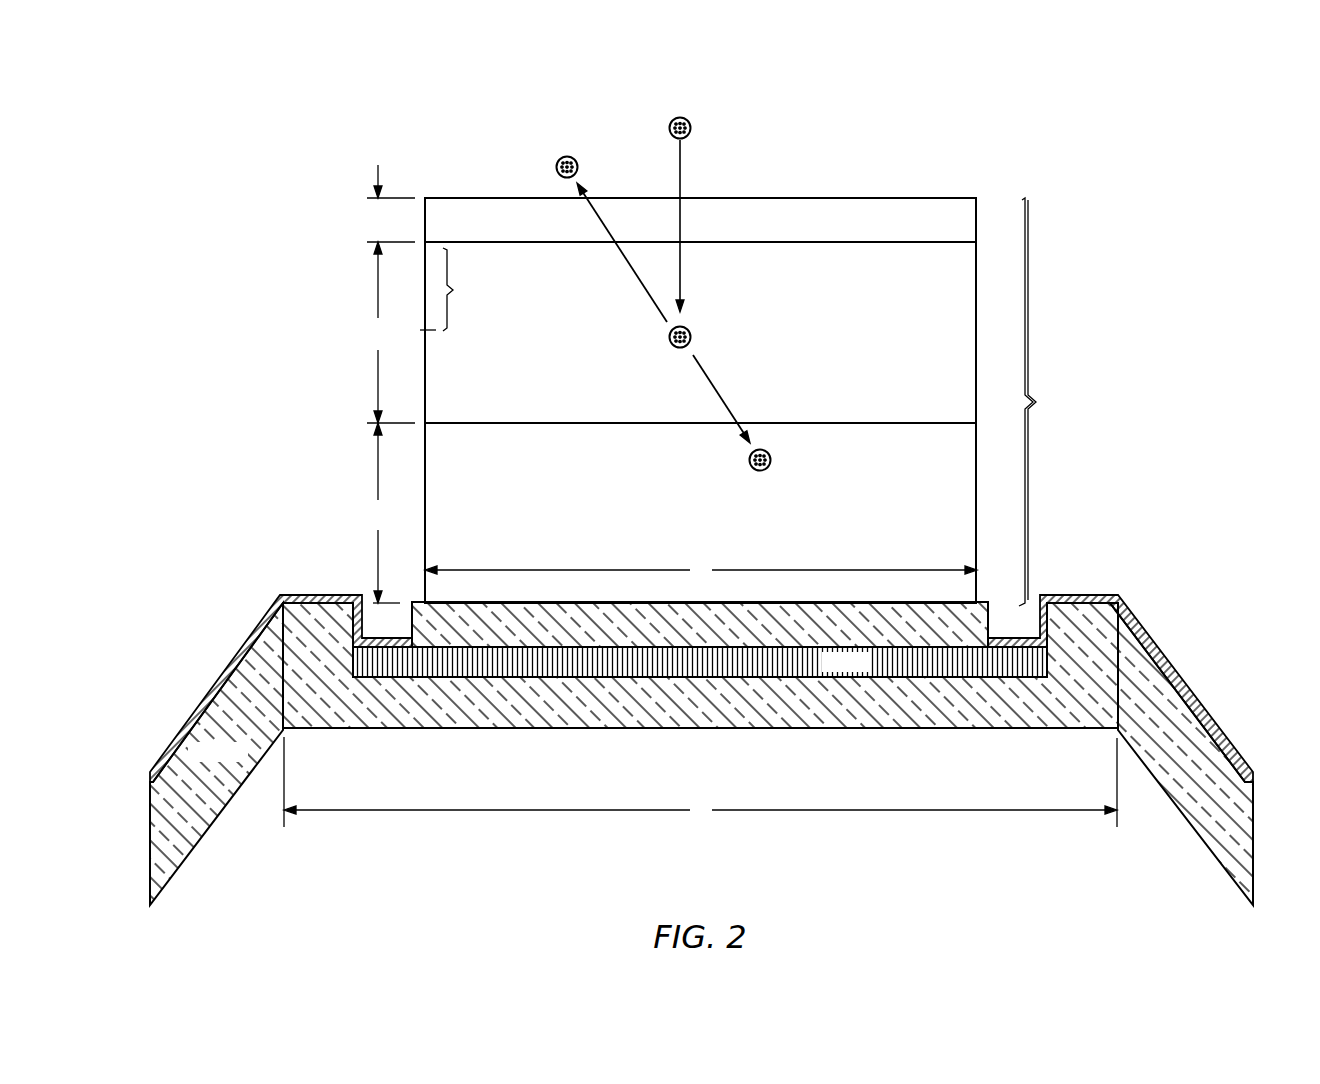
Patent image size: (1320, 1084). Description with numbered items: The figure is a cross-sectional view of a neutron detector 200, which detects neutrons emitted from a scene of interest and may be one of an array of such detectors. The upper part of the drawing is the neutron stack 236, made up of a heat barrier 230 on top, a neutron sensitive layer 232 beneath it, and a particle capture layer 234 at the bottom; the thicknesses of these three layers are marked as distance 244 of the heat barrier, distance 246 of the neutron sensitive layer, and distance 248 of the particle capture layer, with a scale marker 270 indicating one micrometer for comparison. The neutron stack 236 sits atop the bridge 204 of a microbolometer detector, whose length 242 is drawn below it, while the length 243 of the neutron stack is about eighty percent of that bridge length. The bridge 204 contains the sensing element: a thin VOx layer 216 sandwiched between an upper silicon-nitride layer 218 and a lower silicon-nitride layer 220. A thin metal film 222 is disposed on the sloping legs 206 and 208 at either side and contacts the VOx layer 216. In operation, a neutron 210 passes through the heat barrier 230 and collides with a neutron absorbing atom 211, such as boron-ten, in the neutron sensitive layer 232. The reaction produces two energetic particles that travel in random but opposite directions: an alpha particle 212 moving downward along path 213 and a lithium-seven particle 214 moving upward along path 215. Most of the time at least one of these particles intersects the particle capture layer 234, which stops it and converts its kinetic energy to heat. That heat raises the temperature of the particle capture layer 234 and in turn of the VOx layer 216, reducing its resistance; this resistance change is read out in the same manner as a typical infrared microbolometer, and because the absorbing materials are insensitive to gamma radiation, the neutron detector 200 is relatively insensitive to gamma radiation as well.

The neutron detector 200 is at (981, 103).
The bridge 204 is at (1006, 740).
The leg 206 is at (1180, 814).
The leg 208 is at (223, 813).
The neutron 210 is at (667, 126).
The neutron absorbing atom 211 is at (668, 337).
The alpha particle 212 is at (760, 472).
The alpha particle trajectory 213 is at (722, 400).
The 7Li particle 214 is at (556, 165).
The lithium ion trajectory 215 is at (621, 247).
The VOx layer 216 is at (917, 670).
The silicon-nitride layer 218 is at (990, 617).
The silicon-nitride layer 220 is at (482, 730).
The thin metal film 222 is at (221, 683).
The heat barrier 230 is at (838, 207).
The neutron sensitive layer 232 is at (470, 416).
The particle capture layer 234 is at (932, 433).
The neutron stack 236 is at (1050, 402).
The length of the bridge 242 is at (690, 818).
The length of neutron stack 243 is at (692, 565).
The distance of heat barrier 244 is at (367, 218).
The distance of neutron sensitive layer 246 is at (367, 330).
The distance of particle capture layer 248 is at (367, 515).
The one micron scale 270 is at (463, 289).